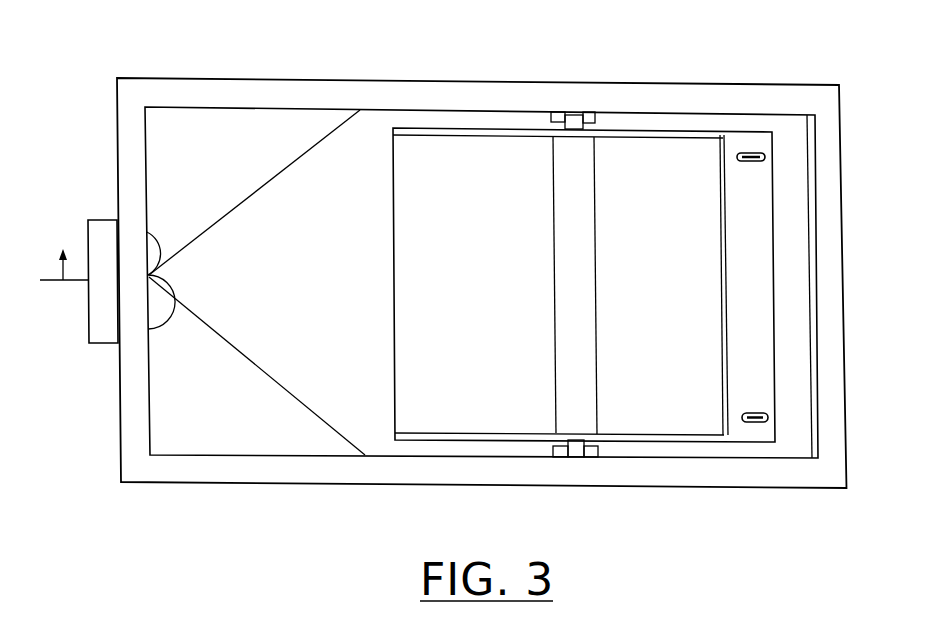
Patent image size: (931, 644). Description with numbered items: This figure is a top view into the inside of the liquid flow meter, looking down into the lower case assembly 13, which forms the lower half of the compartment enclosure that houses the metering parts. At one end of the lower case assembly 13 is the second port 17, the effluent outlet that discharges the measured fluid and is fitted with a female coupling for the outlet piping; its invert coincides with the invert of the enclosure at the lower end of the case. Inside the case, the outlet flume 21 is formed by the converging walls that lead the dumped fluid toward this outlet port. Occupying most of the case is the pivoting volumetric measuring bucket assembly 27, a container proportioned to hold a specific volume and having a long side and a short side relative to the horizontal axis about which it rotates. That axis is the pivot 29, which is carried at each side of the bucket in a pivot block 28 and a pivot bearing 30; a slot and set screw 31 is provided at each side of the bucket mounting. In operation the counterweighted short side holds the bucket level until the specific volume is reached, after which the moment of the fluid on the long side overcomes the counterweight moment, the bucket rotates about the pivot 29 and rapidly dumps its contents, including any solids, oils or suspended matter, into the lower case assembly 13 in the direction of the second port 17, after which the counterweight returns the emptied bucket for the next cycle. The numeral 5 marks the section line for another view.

The lower case assembly 13 is at (199, 76).
The outlet flume 21 is at (237, 142).
The second port 17 is at (87, 282).
The section indicator 5 is at (64, 243).
The pivoting volumetric measuring bucket assembly 27 is at (450, 174).
The pivot block 28 is at (589, 113).
The pivot 29 is at (574, 113).
The pivot bearing 30 is at (568, 113).
The slot and set screw 31 is at (766, 157).